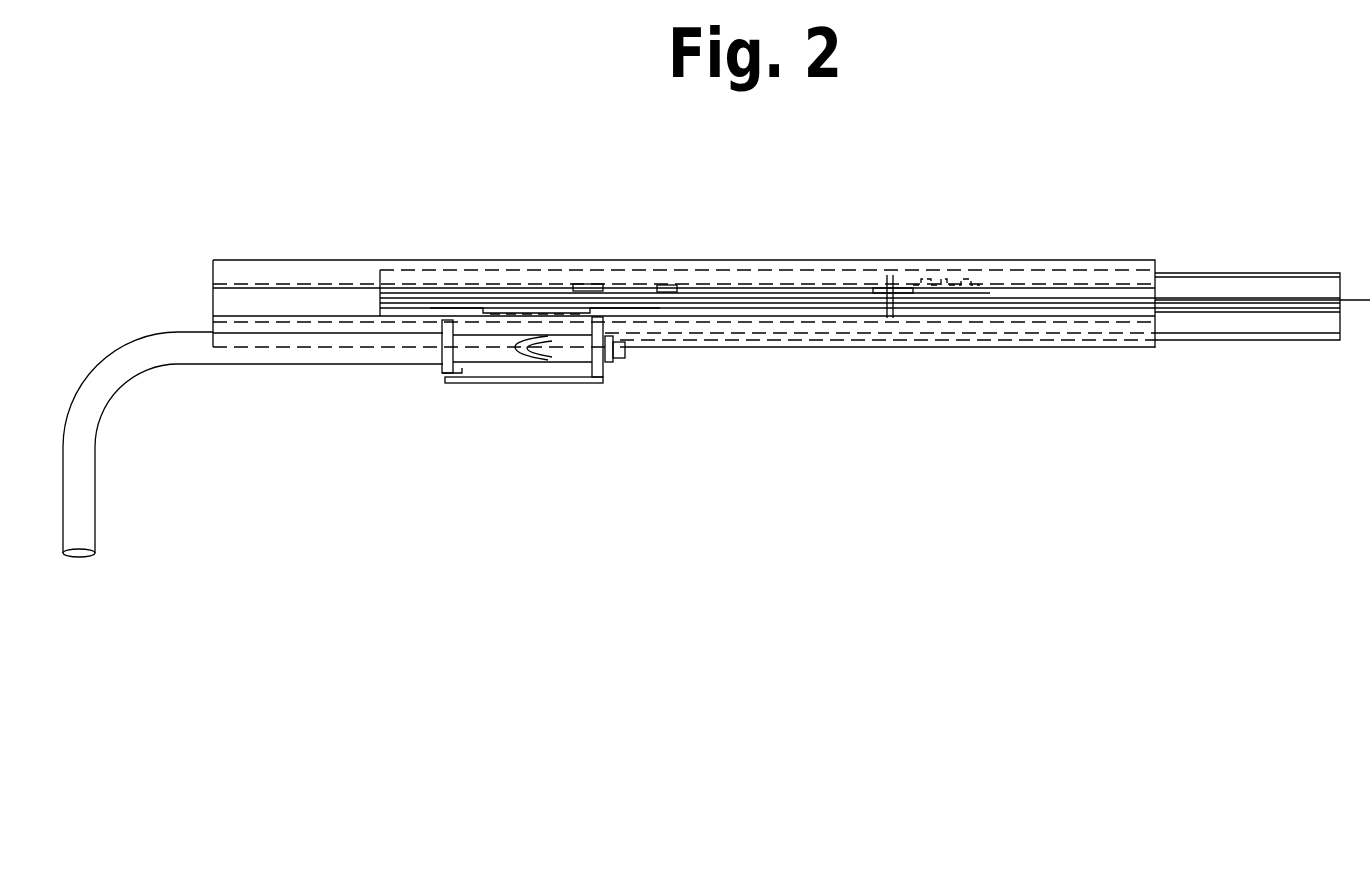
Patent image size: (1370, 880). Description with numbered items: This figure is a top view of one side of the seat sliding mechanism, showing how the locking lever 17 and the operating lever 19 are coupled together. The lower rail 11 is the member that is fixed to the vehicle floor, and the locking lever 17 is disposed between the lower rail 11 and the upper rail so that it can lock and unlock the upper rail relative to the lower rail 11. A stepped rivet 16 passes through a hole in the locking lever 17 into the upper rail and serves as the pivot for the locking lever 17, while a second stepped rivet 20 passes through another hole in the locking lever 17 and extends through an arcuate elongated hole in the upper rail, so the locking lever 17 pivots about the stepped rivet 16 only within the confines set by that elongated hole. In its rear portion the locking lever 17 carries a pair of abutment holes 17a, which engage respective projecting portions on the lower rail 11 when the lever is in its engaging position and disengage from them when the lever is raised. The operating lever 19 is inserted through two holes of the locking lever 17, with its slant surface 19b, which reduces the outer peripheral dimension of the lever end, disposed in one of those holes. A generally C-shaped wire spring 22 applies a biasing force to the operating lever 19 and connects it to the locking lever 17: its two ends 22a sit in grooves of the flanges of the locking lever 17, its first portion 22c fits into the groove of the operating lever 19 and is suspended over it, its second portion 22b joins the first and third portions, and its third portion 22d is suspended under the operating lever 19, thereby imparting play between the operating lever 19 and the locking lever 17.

The lower rail 11 is at (313, 260).
The stepped rivet 16 is at (667, 290).
The locking lever 17 is at (612, 372).
The abutment holes 17a is at (968, 282).
The operating lever 19 is at (88, 466).
The slant surface 19b is at (552, 352).
The stepped rivet 20 is at (893, 290).
The wire spring 22 is at (576, 406).
The ends of the wire spring 22a is at (453, 380).
The second portion 22b is at (498, 322).
The first portion 22c is at (610, 362).
The third portion 22d is at (437, 322).